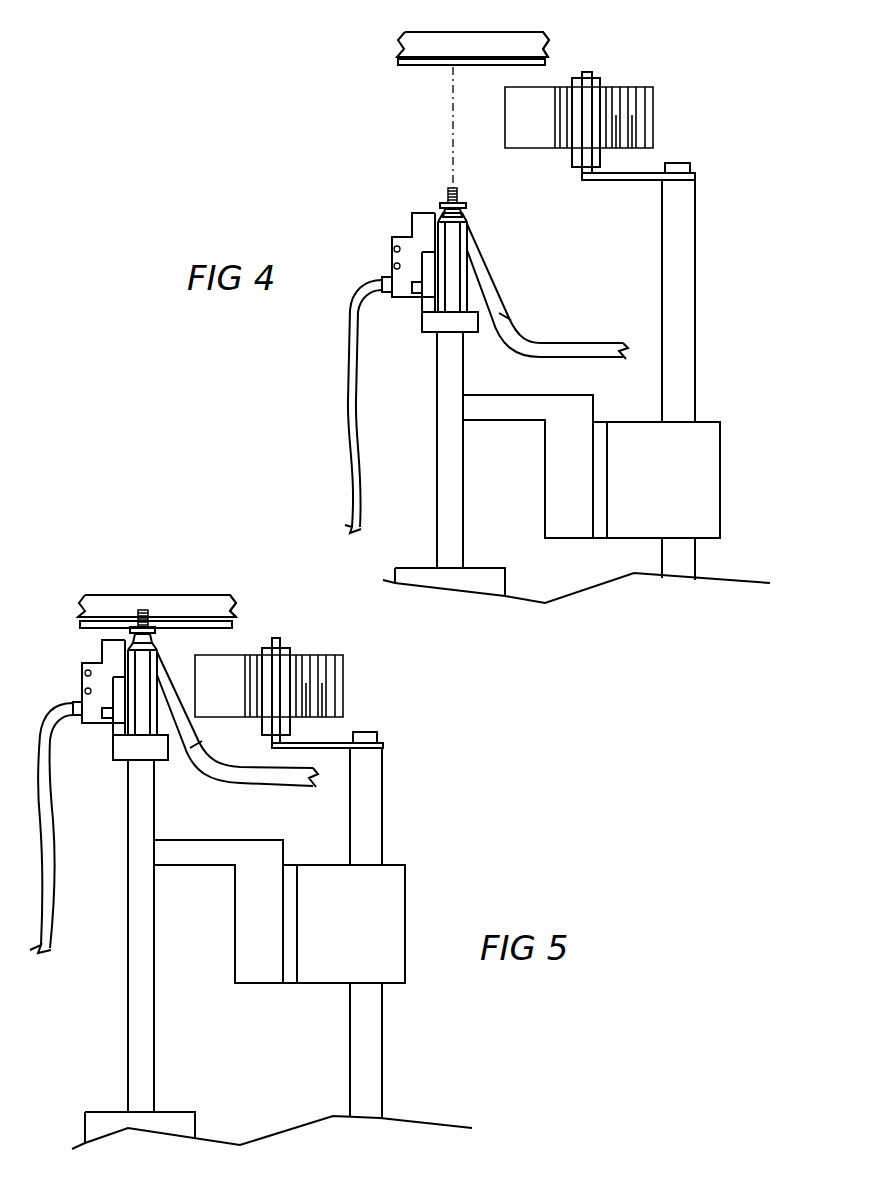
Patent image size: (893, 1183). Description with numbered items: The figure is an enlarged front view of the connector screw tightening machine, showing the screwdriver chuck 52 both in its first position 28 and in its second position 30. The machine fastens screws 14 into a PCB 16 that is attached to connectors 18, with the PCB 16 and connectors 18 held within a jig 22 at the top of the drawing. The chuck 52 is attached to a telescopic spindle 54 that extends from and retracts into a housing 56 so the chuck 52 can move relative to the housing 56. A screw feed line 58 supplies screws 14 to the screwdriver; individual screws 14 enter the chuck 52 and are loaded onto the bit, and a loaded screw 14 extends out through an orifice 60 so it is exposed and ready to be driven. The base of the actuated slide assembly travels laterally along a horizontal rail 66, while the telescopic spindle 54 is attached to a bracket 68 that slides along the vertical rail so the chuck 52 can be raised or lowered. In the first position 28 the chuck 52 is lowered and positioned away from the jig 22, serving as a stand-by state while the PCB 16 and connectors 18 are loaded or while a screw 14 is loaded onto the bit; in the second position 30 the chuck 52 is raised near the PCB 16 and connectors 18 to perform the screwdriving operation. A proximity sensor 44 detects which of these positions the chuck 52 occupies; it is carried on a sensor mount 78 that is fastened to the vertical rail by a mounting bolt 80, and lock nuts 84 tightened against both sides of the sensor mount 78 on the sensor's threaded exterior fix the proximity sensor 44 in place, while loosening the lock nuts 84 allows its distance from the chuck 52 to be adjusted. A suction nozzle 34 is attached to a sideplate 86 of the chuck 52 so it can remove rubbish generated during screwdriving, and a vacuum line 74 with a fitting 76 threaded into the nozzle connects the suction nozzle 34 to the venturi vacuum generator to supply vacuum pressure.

In FIG. 4, the screw 14 is at (448, 195).
In FIG. 5, the screw 14 is at (138, 610).
In FIG. 4, the PCB 16 is at (427, 32).
In FIG. 5, the PCB 16 is at (112, 597).
In FIG. 4, the connectors 18 is at (541, 32).
In FIG. 5, the connectors 18 is at (232, 612).
In FIG. 4, the jig 22 is at (402, 63).
In FIG. 5, the jig 22 is at (97, 632).
In FIG. 4, the first position 28 is at (262, 386).
In FIG. 5, the second position 30 is at (480, 768).
In FIG. 4, the suction nozzle 34 is at (398, 238).
In FIG. 5, the suction nozzle 34 is at (83, 680).
In FIG. 4, the proximity sensor 44 is at (645, 87).
In FIG. 5, the proximity sensor 44 is at (335, 655).
In FIG. 4, the chuck 52 is at (468, 225).
In FIG. 5, the chuck 52 is at (165, 650).
In FIG. 4, the telescopic spindle 54 is at (443, 518).
In FIG. 5, the telescopic spindle 54 is at (145, 1003).
In FIG. 4, the housing 56 is at (384, 582).
In FIG. 5, the housing 56 is at (85, 1130).
In FIG. 4, the screw feed line 58 is at (498, 305).
In FIG. 5, the screw feed line 58 is at (190, 762).
In FIG. 4, the orifice 60 is at (470, 206).
In FIG. 5, the orifice 60 is at (155, 632).
In FIG. 4, the horizontal rail 66 is at (695, 352).
In FIG. 5, the horizontal rail 66 is at (385, 793).
In FIG. 4, the bracket 68 is at (722, 488).
In FIG. 5, the bracket 68 is at (407, 935).
In FIG. 4, the vacuum line 74 is at (357, 410).
In FIG. 5, the vacuum line 74 is at (53, 924).
In FIG. 4, the fitting 76 is at (388, 282).
In FIG. 5, the fitting 76 is at (78, 717).
In FIG. 4, the sensor mount 78 is at (620, 183).
In FIG. 5, the sensor mount 78 is at (338, 750).
In FIG. 4, the mounting bolt 80 is at (680, 163).
In FIG. 5, the mounting bolt 80 is at (368, 732).
In FIG. 4, the lock nuts 84 is at (597, 85).
In FIG. 5, the lock nuts 84 is at (266, 655).
In FIG. 4, the sideplate 86 is at (430, 318).
In FIG. 5, the sideplate 86 is at (120, 725).